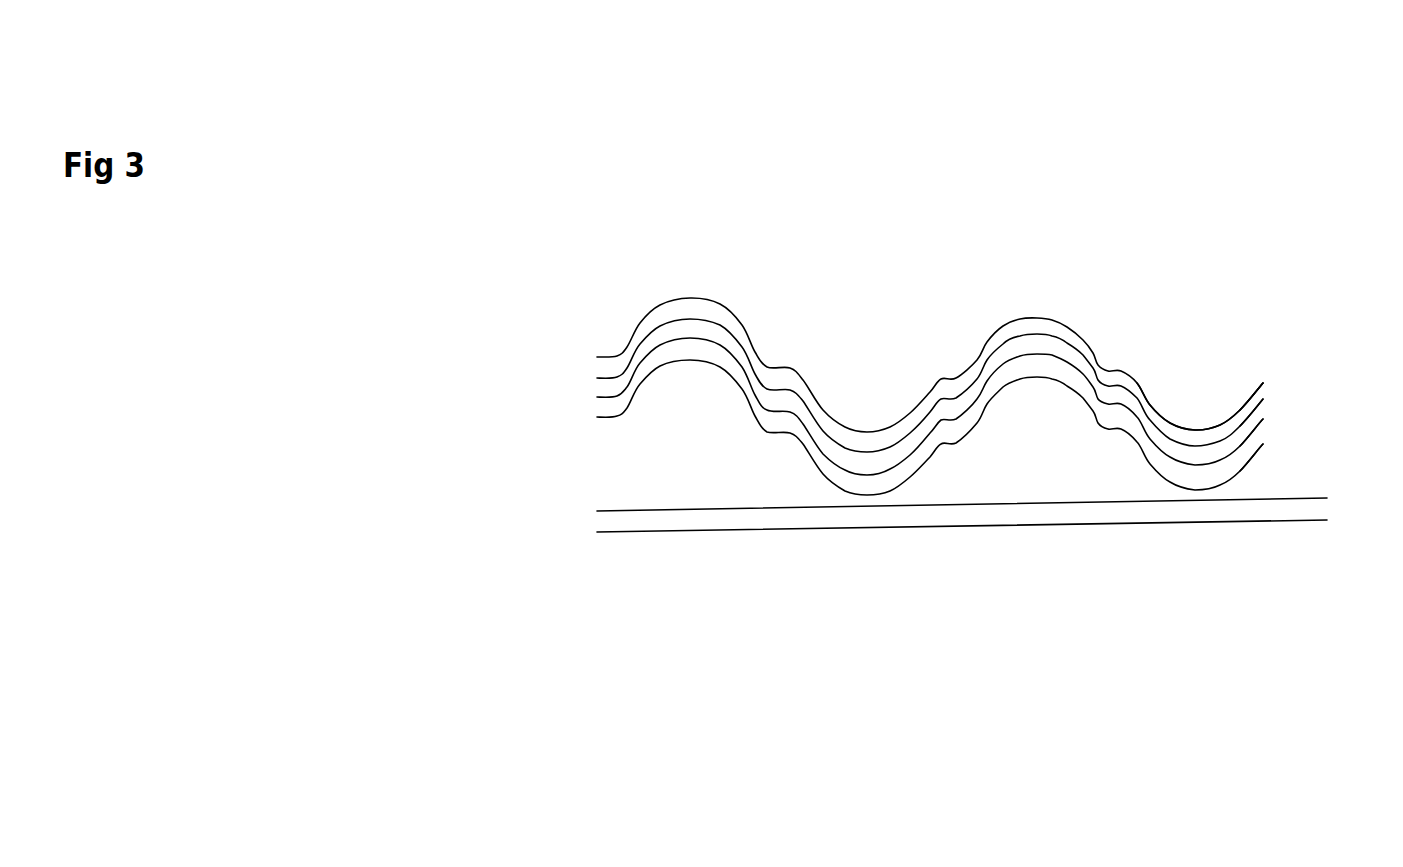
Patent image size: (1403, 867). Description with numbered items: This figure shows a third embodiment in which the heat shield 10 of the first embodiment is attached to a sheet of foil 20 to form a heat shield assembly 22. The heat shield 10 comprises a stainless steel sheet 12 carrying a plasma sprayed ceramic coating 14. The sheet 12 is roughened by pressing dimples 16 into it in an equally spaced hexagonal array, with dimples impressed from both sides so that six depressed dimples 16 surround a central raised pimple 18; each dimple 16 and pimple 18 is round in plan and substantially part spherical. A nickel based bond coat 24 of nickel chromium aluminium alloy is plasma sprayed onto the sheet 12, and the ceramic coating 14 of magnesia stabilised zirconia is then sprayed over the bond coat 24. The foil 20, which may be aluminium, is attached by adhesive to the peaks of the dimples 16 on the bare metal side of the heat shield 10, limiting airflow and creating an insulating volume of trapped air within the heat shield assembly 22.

The heat shield 10 is at (895, 445).
The stainless steel sheet 12 is at (647, 380).
The ceramic coating 14 is at (777, 412).
The dimples 16 is at (1223, 487).
The pimple 18 is at (1003, 318).
The foil 20 is at (977, 517).
The heat shield assembly 22 is at (1200, 407).
The bond coat 24 is at (1255, 433).